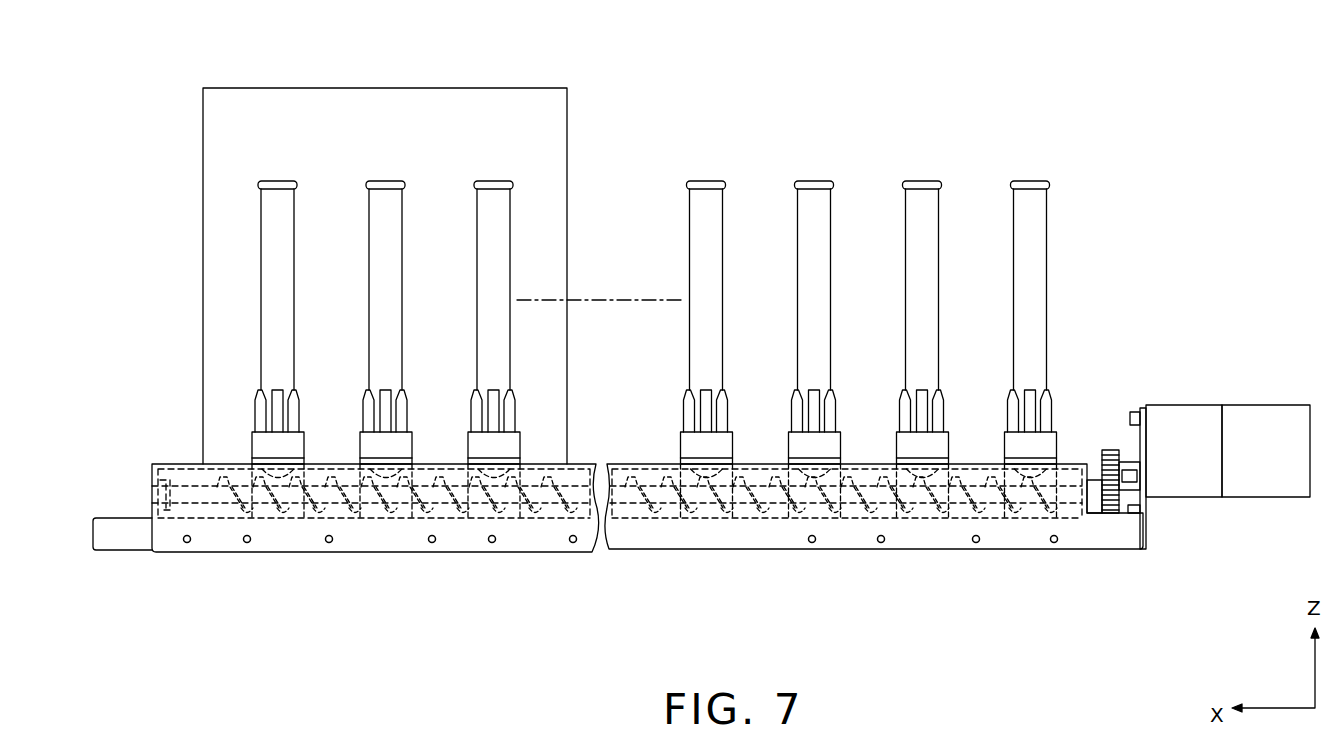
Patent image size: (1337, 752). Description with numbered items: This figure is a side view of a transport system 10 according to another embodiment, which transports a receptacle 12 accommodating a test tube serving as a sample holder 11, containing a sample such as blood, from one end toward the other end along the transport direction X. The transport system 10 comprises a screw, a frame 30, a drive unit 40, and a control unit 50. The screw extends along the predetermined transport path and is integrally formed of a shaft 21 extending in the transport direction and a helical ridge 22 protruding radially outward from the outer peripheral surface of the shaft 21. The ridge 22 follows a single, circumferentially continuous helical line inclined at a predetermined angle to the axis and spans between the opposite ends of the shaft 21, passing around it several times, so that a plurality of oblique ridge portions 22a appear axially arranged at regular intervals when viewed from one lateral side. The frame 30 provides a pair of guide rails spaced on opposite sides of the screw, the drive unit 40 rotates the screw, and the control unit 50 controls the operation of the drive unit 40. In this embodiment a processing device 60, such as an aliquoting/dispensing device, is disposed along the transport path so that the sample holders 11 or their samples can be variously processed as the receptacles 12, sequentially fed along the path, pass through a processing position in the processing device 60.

The transport system 10 is at (1184, 191).
The sample holder 11 is at (294, 245).
The receptacle 12 is at (304, 452).
The shaft 21 is at (672, 500).
The helical ridge 22 is at (630, 520).
The oblique ridge portions 22a is at (622, 478).
The frame 30 is at (537, 538).
The drive unit 40 is at (1186, 420).
The control unit 50 is at (1258, 420).
The processing device 60 is at (458, 100).